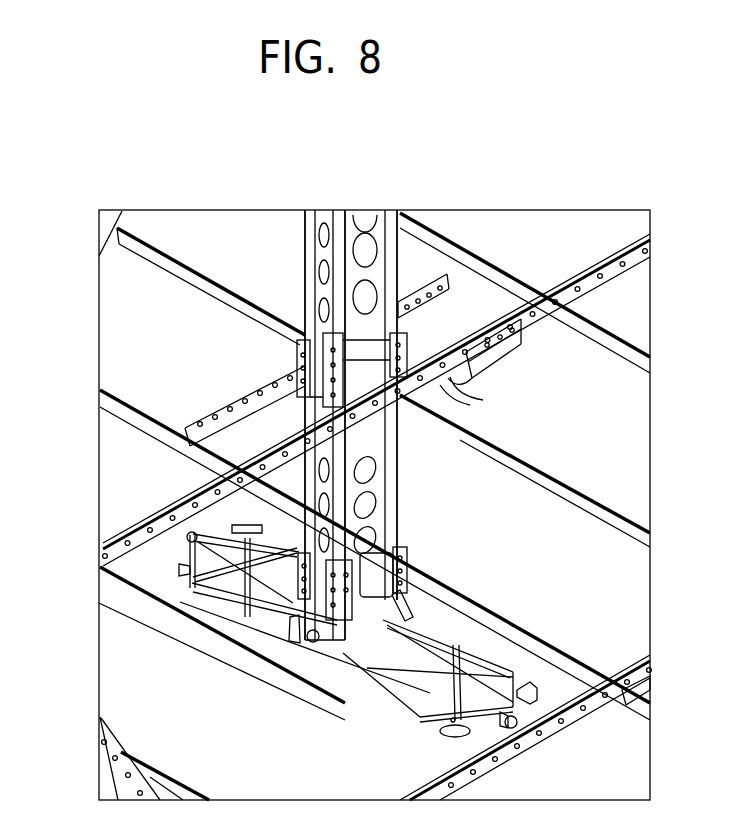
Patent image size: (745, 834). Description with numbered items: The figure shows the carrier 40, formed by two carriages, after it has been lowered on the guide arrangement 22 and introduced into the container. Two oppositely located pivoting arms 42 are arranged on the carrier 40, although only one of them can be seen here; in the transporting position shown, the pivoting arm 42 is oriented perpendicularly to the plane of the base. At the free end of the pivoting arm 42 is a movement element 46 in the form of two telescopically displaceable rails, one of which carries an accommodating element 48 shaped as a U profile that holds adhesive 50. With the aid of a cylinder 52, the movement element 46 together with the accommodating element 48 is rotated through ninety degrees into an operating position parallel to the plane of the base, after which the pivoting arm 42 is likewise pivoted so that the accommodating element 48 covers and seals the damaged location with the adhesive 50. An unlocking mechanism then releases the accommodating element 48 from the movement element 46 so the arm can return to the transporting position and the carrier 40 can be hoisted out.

The guide arrangement 22 is at (310, 290).
The carrier 40 is at (408, 560).
The pivoting arm 42 is at (403, 332).
The movement element 46 is at (420, 272).
The accommodating element 48 is at (253, 375).
The adhesive 50 is at (440, 410).
The cylinder 52 is at (192, 563).